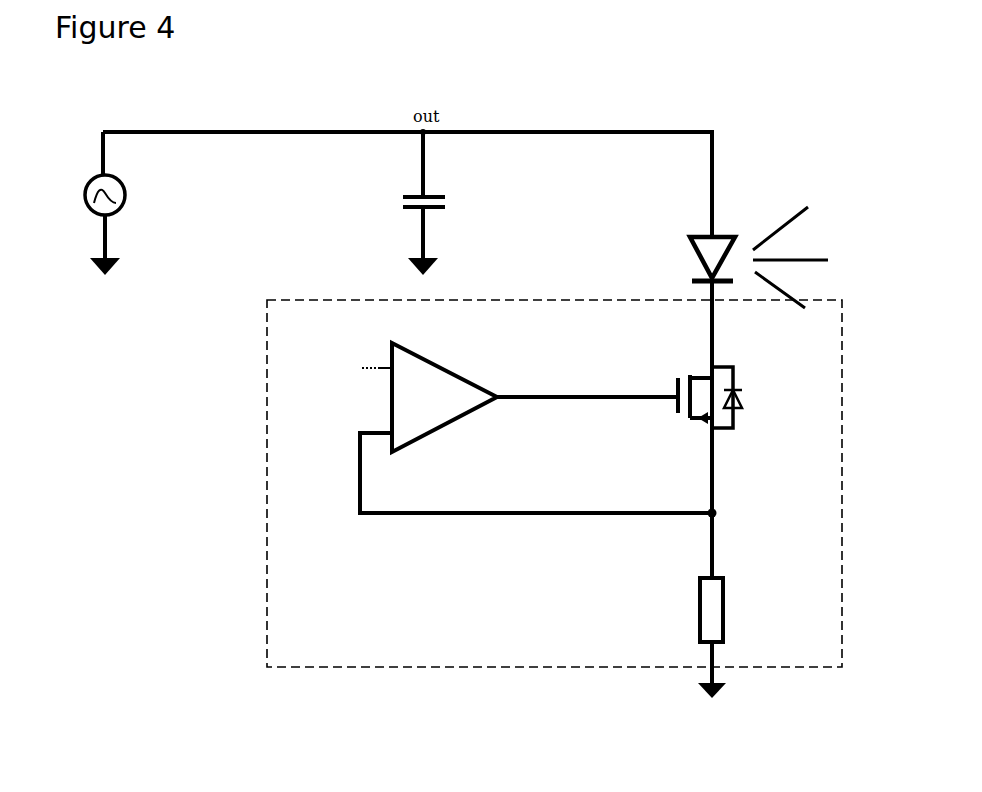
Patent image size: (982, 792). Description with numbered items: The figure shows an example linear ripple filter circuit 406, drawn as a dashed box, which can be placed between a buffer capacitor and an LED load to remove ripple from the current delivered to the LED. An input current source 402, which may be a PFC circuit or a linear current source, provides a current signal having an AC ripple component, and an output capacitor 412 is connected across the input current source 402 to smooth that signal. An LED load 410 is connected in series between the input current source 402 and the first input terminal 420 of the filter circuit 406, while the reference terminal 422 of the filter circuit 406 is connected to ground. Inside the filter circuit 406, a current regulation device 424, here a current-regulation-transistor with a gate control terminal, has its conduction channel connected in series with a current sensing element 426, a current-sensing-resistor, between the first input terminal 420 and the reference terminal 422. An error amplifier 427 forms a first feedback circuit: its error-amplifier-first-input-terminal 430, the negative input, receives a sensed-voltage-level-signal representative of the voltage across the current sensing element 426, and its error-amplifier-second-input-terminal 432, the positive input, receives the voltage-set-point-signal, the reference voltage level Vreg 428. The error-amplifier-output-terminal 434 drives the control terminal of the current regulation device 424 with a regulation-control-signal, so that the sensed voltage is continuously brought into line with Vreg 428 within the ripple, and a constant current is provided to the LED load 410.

The input current source 402 is at (85, 210).
The linear ripple filter circuit 406 is at (265, 607).
The LED load 410 is at (714, 237).
The output capacitor 412 is at (413, 195).
The first input terminal 420 is at (700, 313).
The reference terminal 422 is at (700, 673).
The current regulation device 424 is at (668, 410).
The current sensing element 426 is at (700, 618).
The error amplifier 427 is at (420, 418).
The reference voltage level Vreg 428 is at (296, 344).
The error-amplifier-first-input-terminal 430 is at (380, 440).
The error-amplifier-second-input-terminal 432 is at (388, 370).
The error-amplifier-output-terminal 434 is at (500, 390).